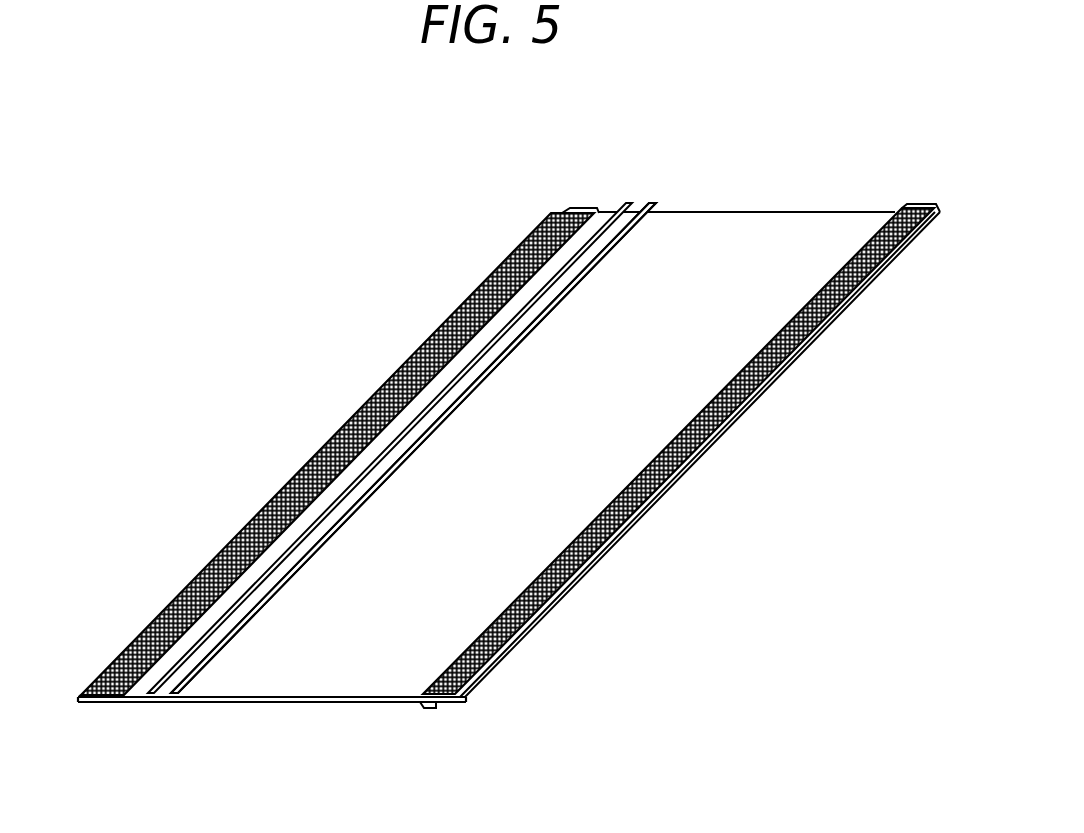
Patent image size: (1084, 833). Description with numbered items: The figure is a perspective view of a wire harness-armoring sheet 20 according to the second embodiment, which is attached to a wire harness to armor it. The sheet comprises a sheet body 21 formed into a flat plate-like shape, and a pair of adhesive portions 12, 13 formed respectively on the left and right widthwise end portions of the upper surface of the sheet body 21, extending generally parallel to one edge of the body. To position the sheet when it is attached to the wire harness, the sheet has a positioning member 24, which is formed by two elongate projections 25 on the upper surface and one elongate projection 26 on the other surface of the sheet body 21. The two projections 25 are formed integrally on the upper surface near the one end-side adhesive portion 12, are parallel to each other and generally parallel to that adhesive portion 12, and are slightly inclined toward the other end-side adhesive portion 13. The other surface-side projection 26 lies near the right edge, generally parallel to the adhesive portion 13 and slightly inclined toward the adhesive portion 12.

The wire harness-armoring sheet 20 is at (446, 265).
The sheet body 21 is at (537, 450).
The one end-side adhesive portion 12 is at (368, 418).
The other end-side adhesive portion 13 is at (672, 475).
The positioning member 24 is at (672, 187).
The projections 25 is at (648, 203).
The other surface-side projection 26 is at (424, 708).